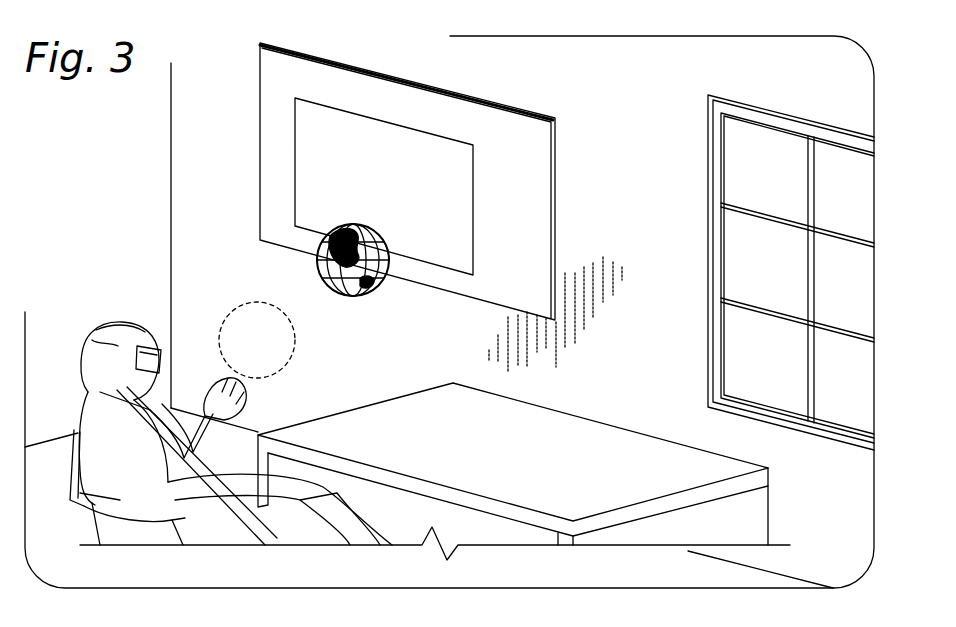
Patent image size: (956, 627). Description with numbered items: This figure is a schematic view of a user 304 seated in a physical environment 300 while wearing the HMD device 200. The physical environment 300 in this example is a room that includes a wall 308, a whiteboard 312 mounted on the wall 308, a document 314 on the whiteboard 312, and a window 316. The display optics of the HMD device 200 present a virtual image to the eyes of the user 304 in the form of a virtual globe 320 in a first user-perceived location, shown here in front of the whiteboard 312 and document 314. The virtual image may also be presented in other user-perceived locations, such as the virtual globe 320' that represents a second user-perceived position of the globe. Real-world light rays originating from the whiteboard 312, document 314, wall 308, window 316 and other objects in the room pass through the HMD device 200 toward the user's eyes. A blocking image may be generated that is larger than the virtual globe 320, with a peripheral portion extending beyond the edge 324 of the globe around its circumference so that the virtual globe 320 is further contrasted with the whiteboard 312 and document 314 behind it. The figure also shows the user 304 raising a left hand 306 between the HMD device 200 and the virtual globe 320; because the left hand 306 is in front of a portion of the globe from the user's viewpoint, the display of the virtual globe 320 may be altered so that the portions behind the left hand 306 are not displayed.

The HMD device 200 is at (163, 361).
The physical environment 300 is at (637, 142).
The user 304 is at (72, 458).
The left hand 306 is at (245, 388).
The wall 308 is at (657, 341).
The whiteboard 312 is at (490, 102).
The document 314 is at (477, 183).
The window 316 is at (748, 103).
The virtual globe 320 is at (374, 276).
The virtual globe 320' is at (294, 345).
The edge 324 is at (317, 262).